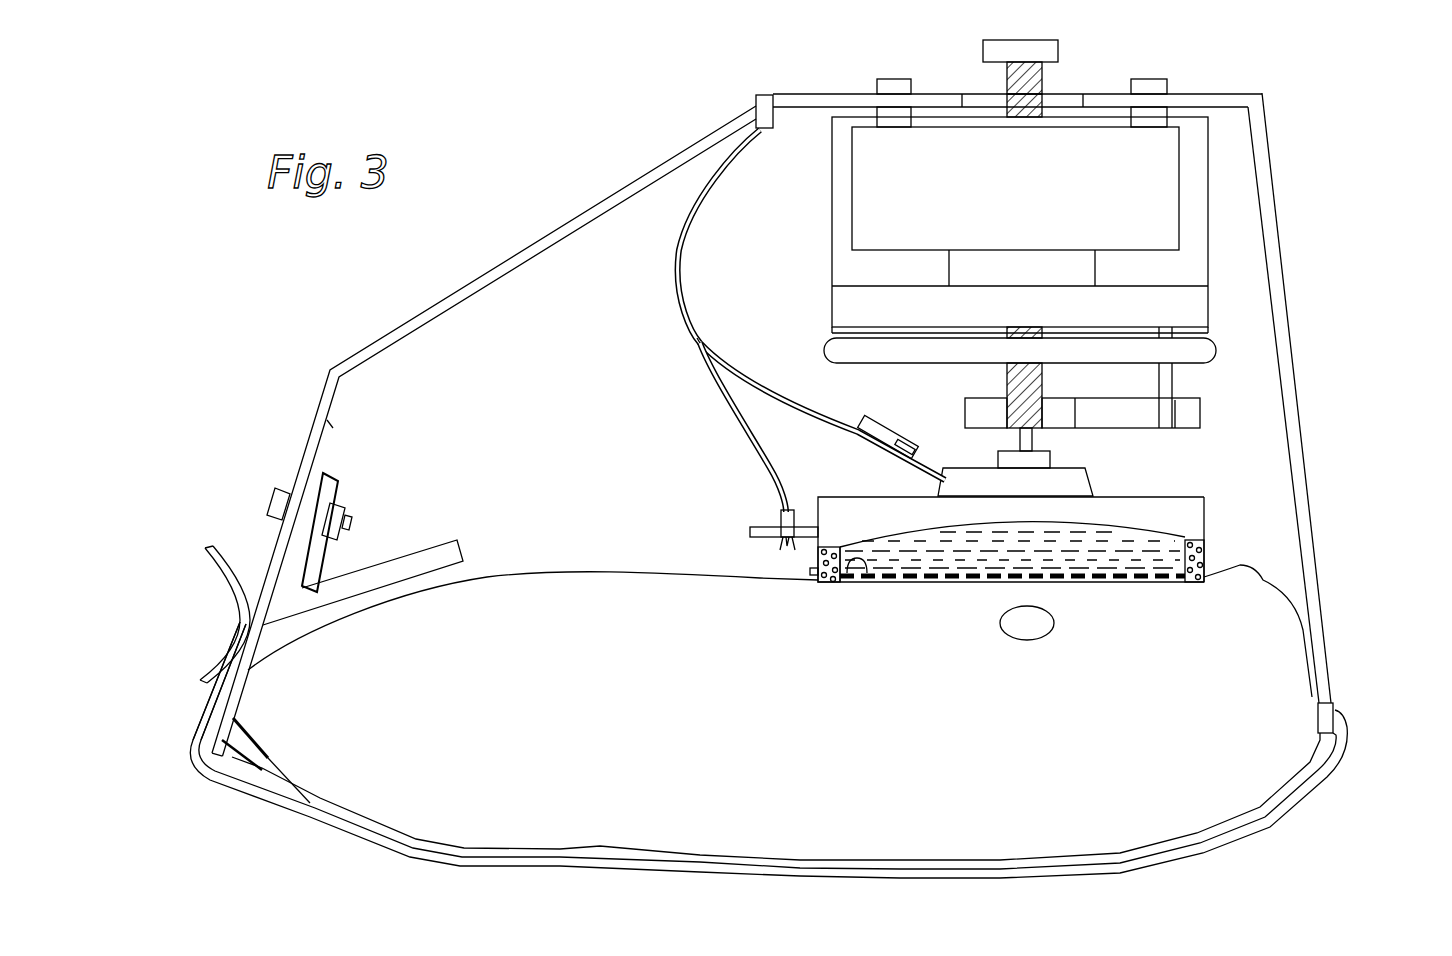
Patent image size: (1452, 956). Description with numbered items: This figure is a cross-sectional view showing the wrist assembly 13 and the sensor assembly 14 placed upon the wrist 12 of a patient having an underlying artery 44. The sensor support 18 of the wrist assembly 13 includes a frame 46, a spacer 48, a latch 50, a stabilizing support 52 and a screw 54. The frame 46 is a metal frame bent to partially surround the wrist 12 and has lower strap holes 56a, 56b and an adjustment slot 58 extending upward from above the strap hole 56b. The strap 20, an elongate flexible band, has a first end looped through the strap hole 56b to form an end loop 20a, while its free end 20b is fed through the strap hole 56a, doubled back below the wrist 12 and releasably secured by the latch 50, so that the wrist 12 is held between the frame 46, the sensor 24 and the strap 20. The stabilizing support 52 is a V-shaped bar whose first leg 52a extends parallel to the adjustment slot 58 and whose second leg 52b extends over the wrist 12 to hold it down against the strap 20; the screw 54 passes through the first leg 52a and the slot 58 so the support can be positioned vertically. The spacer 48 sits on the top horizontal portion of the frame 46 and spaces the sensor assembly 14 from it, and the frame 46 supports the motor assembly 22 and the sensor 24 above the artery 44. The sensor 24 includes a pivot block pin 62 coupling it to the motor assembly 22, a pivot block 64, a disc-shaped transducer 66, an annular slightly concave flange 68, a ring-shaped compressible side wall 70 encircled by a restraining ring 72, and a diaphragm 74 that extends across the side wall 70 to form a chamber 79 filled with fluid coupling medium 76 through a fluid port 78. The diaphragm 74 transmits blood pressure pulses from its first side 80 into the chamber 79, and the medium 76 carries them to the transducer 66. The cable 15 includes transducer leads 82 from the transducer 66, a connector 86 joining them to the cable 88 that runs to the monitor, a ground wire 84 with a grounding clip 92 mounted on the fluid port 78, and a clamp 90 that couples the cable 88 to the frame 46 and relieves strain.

The wrist 12 is at (676, 714).
The wrist assembly 13 is at (540, 235).
The sensor assembly 14 is at (798, 180).
The cable 15 is at (672, 276).
The sensor support 18 is at (455, 293).
The strap 20 is at (330, 827).
The end loop 20a is at (270, 755).
The free end 20b is at (205, 720).
The motor assembly 22 is at (828, 258).
The sensor 24 is at (1162, 495).
The artery 44 is at (1042, 635).
The frame 46 is at (505, 258).
The spacer 48 is at (880, 118).
The latch 50 is at (210, 670).
The stabilizing support 52 is at (362, 556).
The first leg 52a is at (325, 475).
The second leg 52b is at (413, 563).
The screw 54 is at (272, 490).
The strap hole 56a is at (1333, 710).
The strap hole 56b is at (235, 738).
The adjustment slot 58 is at (333, 420).
The pivot block pin 62 is at (1030, 435).
The pivot block 64 is at (1000, 460).
The transducer 66 is at (1082, 484).
The flange 68 is at (1185, 512).
The side wall 70 is at (1208, 553).
The restraining ring 72 is at (1257, 583).
The diaphragm 74 is at (1026, 584).
The fluid coupling medium 76 is at (1012, 548).
The fluid port 78 is at (757, 527).
The chamber 79 is at (904, 556).
The first side 80 is at (890, 583).
The transducer leads 82 is at (927, 453).
The ground wire 84 is at (773, 483).
The connector 86 is at (880, 425).
The cable 88 is at (697, 343).
The clamp 90 is at (768, 95).
The grounding clip 92 is at (780, 543).